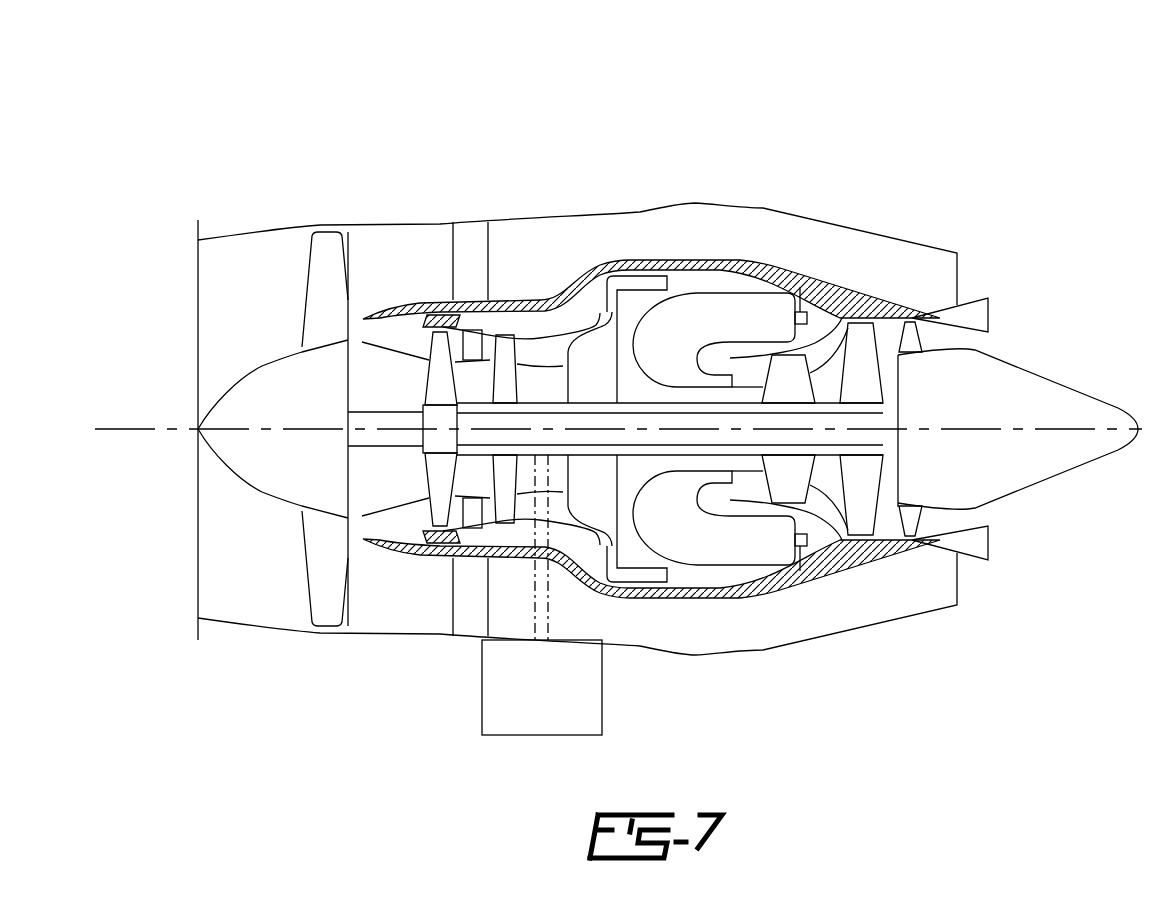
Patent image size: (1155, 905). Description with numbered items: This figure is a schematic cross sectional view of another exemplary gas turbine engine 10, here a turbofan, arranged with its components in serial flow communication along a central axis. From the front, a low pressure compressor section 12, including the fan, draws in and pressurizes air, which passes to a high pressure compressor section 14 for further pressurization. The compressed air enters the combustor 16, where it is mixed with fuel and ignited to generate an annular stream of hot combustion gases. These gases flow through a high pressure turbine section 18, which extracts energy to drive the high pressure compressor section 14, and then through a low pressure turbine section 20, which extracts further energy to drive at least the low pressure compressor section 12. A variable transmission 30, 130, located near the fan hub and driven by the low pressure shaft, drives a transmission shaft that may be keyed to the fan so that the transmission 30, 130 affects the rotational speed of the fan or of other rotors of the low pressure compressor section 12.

The gas turbine engine 10 is at (892, 157).
The low pressure compressor section 12 is at (438, 343).
The high pressure compressor section 14 is at (533, 347).
The combustor 16 is at (703, 320).
The high pressure turbine section 18 is at (795, 485).
The low pressure turbine section 20 is at (862, 517).
The variable transmission 30 is at (412, 555).
The variable transmission 130 is at (443, 440).